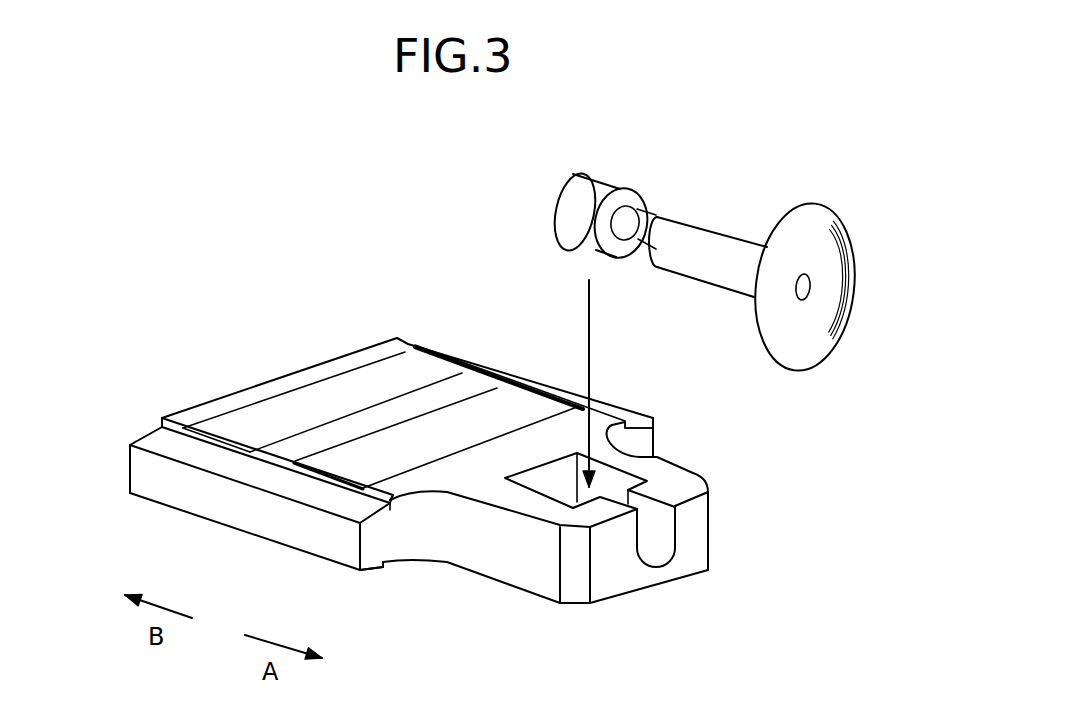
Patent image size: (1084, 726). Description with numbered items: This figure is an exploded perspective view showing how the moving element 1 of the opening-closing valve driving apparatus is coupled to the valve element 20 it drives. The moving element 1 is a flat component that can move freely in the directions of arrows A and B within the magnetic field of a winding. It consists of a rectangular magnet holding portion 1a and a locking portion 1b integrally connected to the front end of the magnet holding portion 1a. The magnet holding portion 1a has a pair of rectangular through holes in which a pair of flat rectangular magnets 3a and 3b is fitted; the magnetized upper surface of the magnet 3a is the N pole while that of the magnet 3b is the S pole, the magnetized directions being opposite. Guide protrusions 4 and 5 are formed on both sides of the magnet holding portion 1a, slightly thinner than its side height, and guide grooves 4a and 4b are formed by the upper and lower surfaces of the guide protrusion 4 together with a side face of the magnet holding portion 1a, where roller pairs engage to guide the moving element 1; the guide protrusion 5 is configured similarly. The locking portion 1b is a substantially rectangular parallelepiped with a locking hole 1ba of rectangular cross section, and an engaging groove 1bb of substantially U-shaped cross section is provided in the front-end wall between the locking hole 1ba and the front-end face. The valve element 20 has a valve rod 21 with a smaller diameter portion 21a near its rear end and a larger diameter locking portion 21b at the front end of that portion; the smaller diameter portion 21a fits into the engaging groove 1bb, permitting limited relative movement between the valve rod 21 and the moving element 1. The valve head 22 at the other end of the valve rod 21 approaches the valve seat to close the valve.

The moving element 1 is at (488, 442).
The magnet holding portion 1a is at (238, 382).
The locking portion 1b is at (463, 480).
The locking hole 1ba is at (607, 475).
The engaging groove 1bb is at (663, 538).
The magnet 3a is at (382, 365).
The magnet 3b is at (530, 410).
The guide protrusion 4 is at (225, 527).
The guide groove 4a is at (150, 438).
The guide groove 4b is at (373, 570).
The guide protrusion 5 is at (660, 433).
The valve element 20 is at (742, 230).
The valve rod 21 is at (707, 243).
The smaller diameter portion 21a is at (643, 212).
The larger diameter locking portion 21b is at (586, 187).
The valve head 22 is at (840, 233).